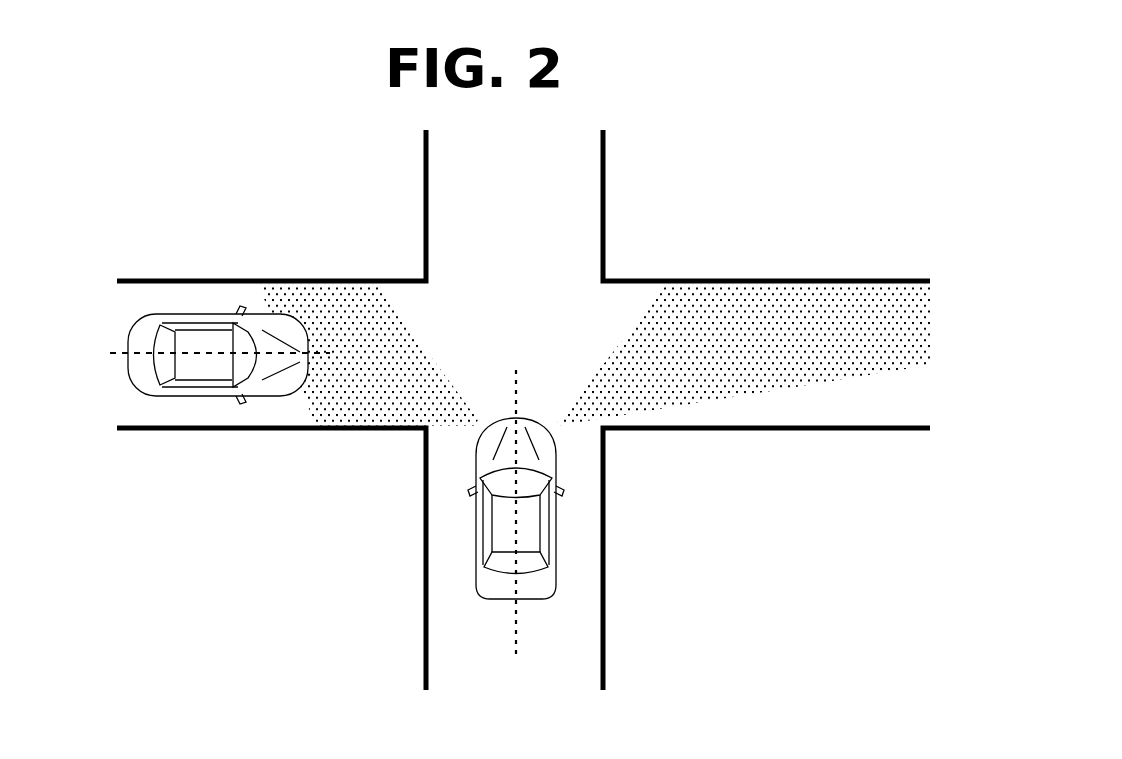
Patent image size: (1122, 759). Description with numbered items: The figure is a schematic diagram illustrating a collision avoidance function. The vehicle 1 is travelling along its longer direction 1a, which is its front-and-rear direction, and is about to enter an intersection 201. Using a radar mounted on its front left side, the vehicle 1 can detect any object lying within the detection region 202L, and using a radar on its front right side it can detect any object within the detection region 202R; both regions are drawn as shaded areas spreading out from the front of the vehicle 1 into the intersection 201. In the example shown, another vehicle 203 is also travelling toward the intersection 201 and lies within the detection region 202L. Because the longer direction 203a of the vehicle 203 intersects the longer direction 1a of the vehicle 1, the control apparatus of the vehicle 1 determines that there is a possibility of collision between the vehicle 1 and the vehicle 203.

The vehicle 1 is at (494, 600).
The longer direction of the vehicle 1a is at (518, 630).
The intersection 201 is at (515, 310).
The detection region 202L is at (337, 315).
The detection region 202R is at (787, 308).
The vehicle 203 is at (127, 333).
The longer direction of the vehicle 203a is at (113, 353).